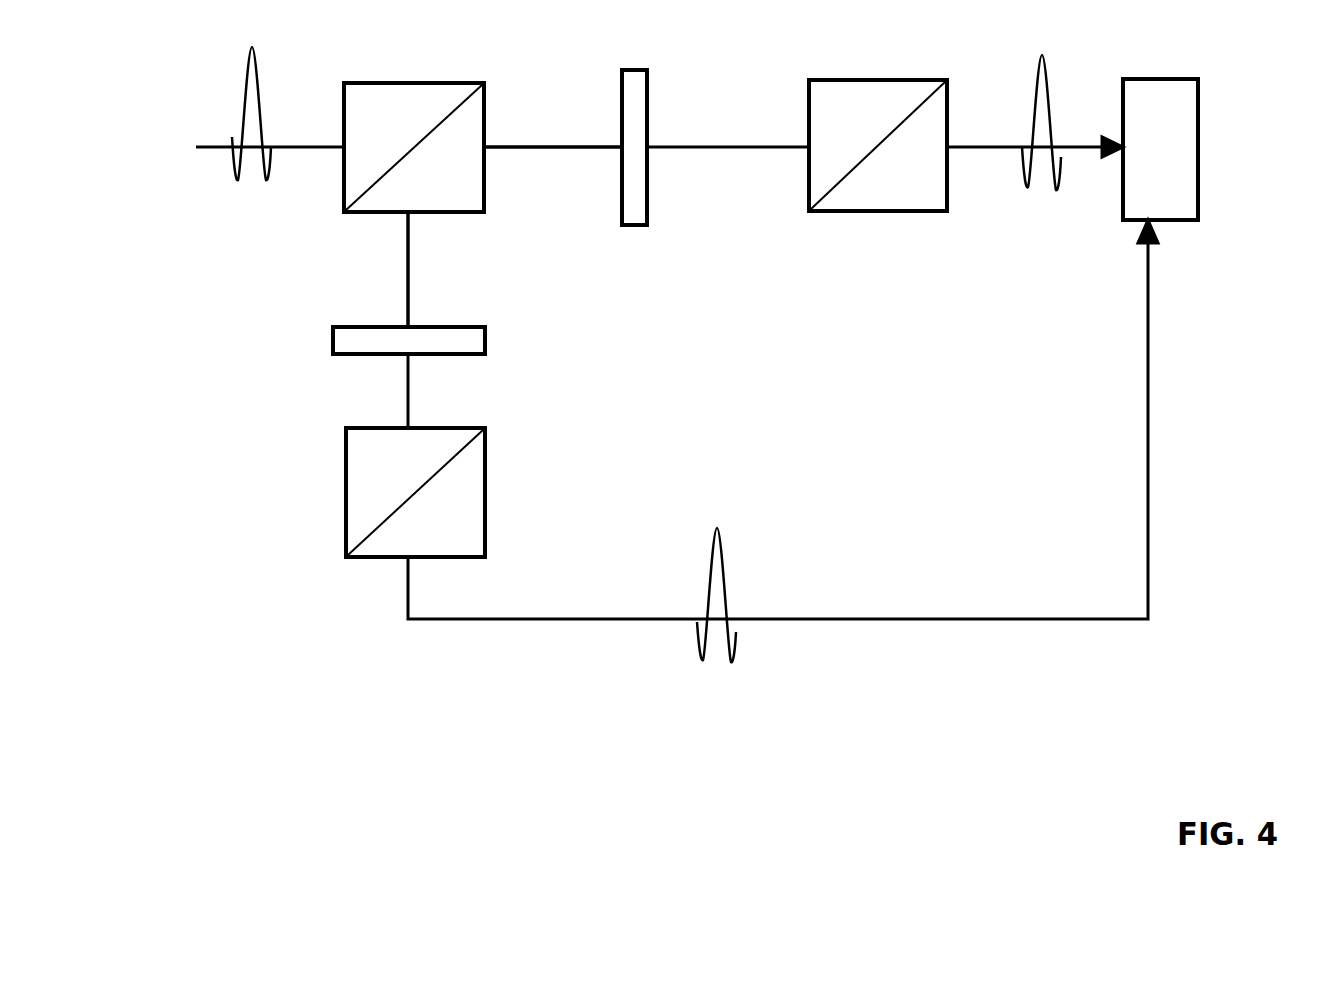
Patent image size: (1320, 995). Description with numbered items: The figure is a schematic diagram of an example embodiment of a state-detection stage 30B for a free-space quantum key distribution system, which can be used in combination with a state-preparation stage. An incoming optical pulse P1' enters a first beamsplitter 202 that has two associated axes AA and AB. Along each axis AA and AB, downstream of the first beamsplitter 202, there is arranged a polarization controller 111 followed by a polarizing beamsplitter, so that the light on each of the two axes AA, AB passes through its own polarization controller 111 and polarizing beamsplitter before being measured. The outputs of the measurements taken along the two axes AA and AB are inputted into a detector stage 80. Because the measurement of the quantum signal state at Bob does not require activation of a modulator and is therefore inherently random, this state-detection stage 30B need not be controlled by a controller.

The state-detection stage 30B is at (918, 377).
The first beamsplitter 202 is at (407, 83).
The polarization controller 111 is at (485, 340).
The detector stage 80 is at (1144, 167).
The input optical pulse P1' is at (285, 93).
The axis AA is at (508, 150).
The axis AB is at (407, 300).